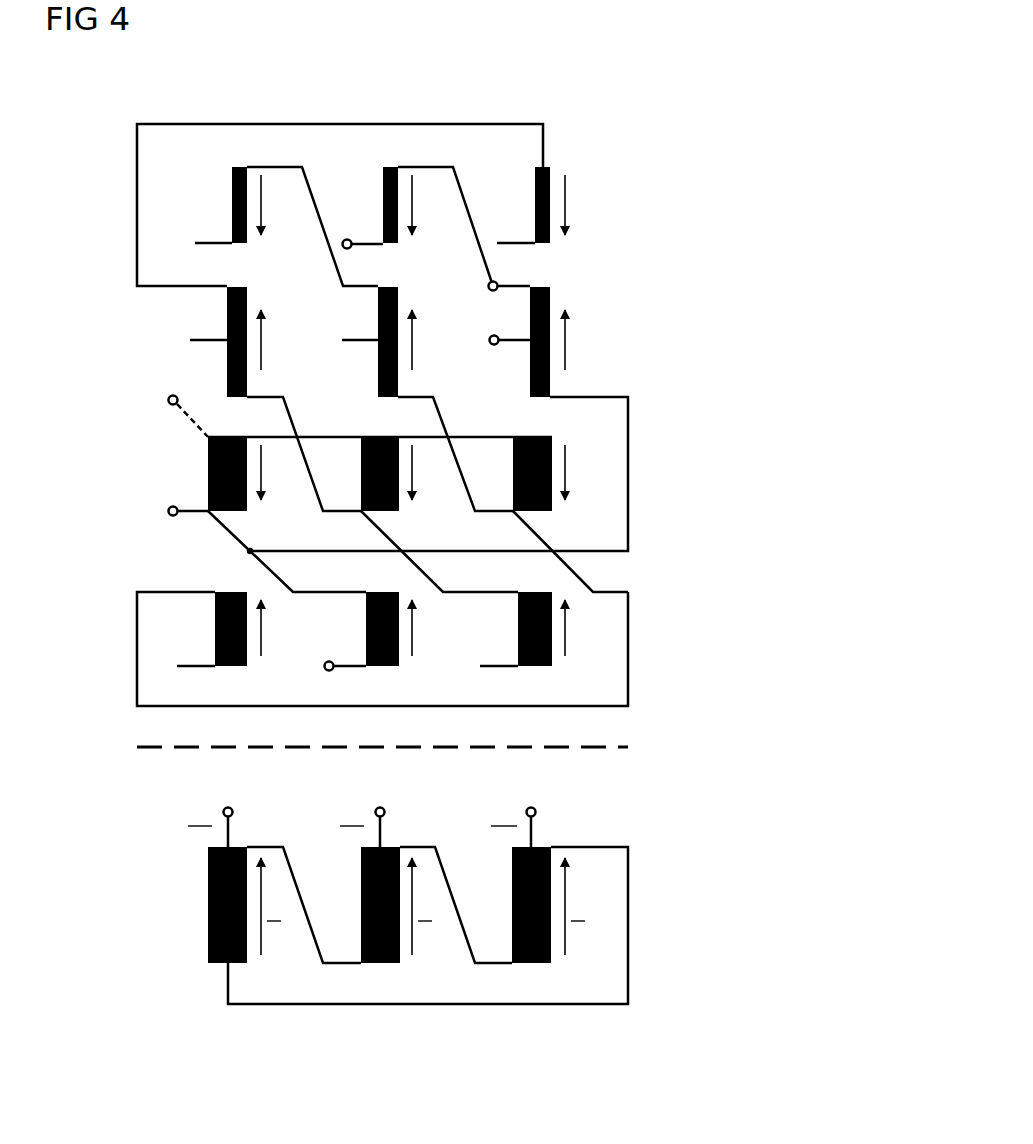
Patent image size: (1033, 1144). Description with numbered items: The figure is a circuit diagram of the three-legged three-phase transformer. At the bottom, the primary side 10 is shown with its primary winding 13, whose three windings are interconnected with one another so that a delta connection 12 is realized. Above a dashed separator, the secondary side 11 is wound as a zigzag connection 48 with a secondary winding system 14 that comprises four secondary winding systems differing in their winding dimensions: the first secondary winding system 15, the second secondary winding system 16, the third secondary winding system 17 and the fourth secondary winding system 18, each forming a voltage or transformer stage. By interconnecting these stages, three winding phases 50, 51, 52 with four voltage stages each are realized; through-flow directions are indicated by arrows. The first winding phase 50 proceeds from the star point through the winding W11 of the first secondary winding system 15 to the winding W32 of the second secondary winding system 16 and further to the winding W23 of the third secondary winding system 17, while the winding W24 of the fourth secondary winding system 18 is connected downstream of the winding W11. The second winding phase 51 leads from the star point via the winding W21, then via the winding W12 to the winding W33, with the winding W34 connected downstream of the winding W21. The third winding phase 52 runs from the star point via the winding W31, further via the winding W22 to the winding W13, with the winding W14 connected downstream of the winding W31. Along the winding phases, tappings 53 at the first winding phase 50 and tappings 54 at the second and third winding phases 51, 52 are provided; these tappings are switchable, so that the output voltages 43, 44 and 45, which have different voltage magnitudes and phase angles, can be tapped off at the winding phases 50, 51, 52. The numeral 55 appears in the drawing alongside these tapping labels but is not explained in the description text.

The secondary side 11 is at (436, 367).
The secondary winding system 14 is at (436, 367).
The zigzag connection 48 is at (436, 367).
The primary side 10 is at (408, 951).
The delta connection 12 is at (408, 951).
The primary winding 13 is at (383, 1012).
The third secondary winding system 17 is at (436, 205).
The second secondary winding system 16 is at (445, 411).
The first secondary winding system 15 is at (443, 453).
The fourth secondary winding system 18 is at (436, 649).
The coil terminal 55 is at (286, 317).
The output voltage 45 is at (210, 245).
The tappings 53 is at (437, 316).
The output voltage 43 is at (362, 245).
The tappings 54 is at (391, 317).
The output voltage 44 is at (513, 245).
The first winding phase 50 is at (272, 568).
The second winding phase 51 is at (428, 570).
The third winding phase 52 is at (577, 572).
The winding W11 is at (208, 484).
The winding W12 is at (227, 312).
The winding W13 is at (232, 198).
The winding W14 is at (215, 615).
The winding W21 is at (361, 484).
The winding W22 is at (378, 312).
The winding W23 is at (383, 198).
The winding W24 is at (366, 615).
The winding W31 is at (513, 484).
The winding W32 is at (530, 312).
The winding W33 is at (535, 198).
The winding W34 is at (518, 615).